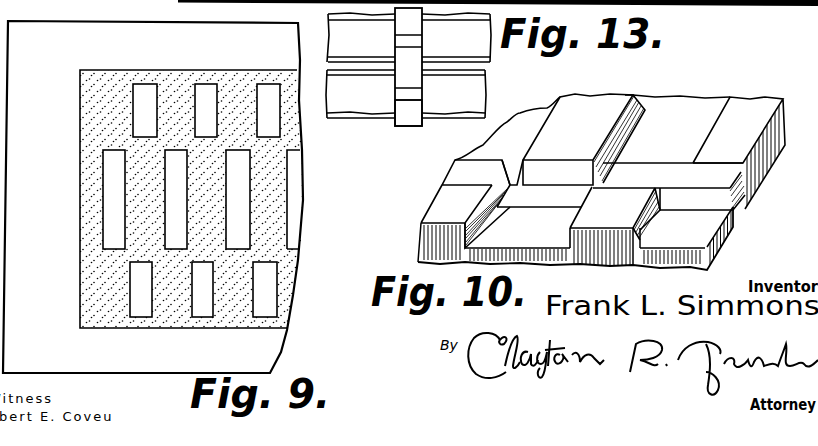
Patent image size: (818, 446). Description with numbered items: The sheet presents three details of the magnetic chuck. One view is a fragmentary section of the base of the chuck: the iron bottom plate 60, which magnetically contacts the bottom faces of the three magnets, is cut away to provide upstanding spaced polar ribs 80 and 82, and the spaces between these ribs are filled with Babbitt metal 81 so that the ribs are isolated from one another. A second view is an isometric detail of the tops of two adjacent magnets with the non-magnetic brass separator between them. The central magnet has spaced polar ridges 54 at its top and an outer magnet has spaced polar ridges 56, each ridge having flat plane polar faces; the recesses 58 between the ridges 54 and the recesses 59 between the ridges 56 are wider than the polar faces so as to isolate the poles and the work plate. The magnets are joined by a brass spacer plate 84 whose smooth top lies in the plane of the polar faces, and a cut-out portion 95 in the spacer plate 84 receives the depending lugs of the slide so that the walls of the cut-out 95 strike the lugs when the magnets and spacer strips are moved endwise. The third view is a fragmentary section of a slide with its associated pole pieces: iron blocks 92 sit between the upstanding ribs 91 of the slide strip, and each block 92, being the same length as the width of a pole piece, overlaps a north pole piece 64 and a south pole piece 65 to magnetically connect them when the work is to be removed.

In FIG. 9, the iron bottom plate 60 is at (153, 197).
In FIG. 9, the upstanding spaced polar ribs 80 is at (232, 199).
In FIG. 9, the Babbitt metal 81 is at (191, 200).
In FIG. 9, the upstanding spaced polar ribs 82 is at (173, 200).
In FIG. 13, the south pole pieces 65 is at (409, 37).
In FIG. 13, the north pole pieces 64 is at (406, 94).
In FIG. 13, the iron blocks 92 is at (408, 67).
In FIG. 13, the upstanding ribs 91 is at (402, 96).
In FIG. 10, the polar ridges 54 is at (540, 181).
In FIG. 10, the polar ridges 56 is at (654, 151).
In FIG. 10, the recesses 58 is at (518, 248).
In FIG. 10, the recesses 59 is at (633, 96).
In FIG. 10, the non-magnetic spacers 84 is at (702, 192).
In FIG. 10, the cut-out portion 95 is at (500, 187).